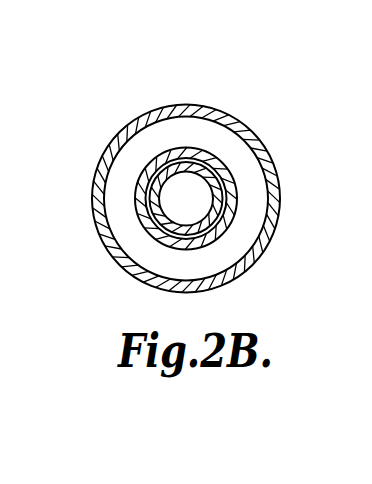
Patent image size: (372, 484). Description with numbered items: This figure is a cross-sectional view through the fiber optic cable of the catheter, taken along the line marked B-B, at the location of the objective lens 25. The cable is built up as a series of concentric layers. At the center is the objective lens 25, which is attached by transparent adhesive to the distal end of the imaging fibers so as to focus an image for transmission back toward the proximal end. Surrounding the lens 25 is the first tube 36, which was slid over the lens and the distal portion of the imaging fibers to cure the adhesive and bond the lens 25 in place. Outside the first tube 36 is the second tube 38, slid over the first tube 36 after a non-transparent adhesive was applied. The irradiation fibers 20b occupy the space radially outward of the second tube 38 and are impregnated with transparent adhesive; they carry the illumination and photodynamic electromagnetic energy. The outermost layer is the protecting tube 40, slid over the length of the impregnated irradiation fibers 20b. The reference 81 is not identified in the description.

The catheter shaft assembly 81 is at (244, 104).
The protecting tube 40 is at (260, 134).
The irradiation fibers 20b is at (250, 185).
The second tube 38 is at (175, 153).
The first tube 36 is at (214, 209).
The objective lens 25 is at (168, 190).